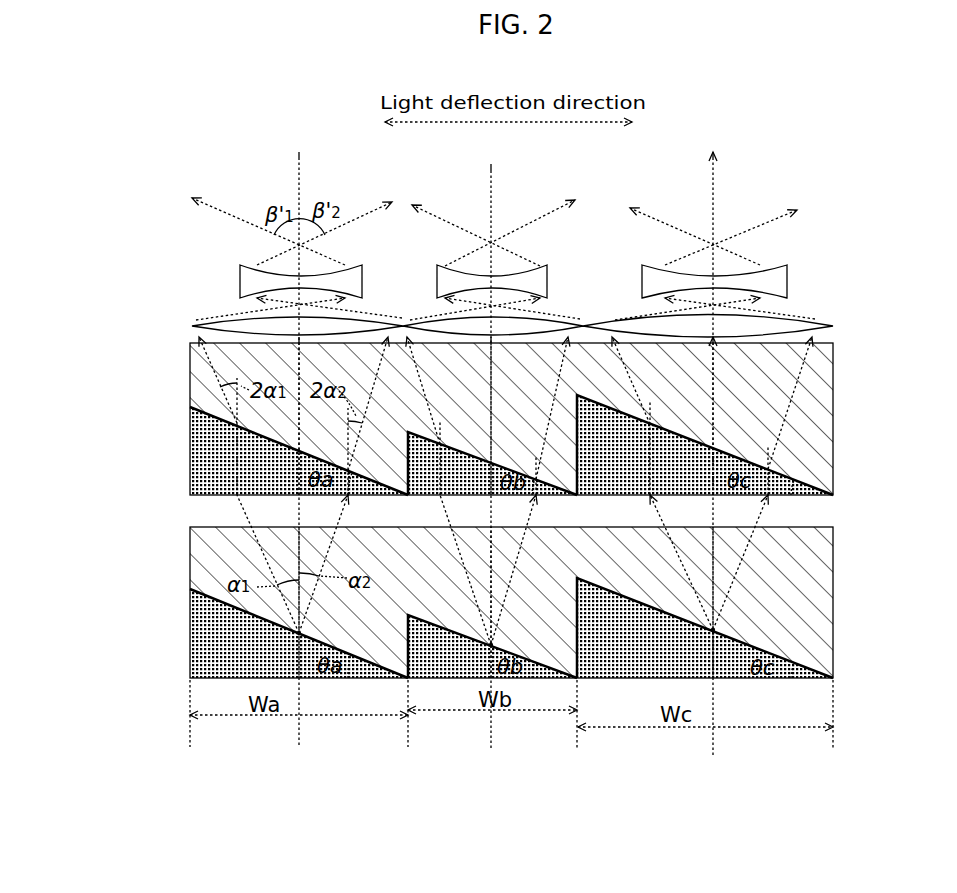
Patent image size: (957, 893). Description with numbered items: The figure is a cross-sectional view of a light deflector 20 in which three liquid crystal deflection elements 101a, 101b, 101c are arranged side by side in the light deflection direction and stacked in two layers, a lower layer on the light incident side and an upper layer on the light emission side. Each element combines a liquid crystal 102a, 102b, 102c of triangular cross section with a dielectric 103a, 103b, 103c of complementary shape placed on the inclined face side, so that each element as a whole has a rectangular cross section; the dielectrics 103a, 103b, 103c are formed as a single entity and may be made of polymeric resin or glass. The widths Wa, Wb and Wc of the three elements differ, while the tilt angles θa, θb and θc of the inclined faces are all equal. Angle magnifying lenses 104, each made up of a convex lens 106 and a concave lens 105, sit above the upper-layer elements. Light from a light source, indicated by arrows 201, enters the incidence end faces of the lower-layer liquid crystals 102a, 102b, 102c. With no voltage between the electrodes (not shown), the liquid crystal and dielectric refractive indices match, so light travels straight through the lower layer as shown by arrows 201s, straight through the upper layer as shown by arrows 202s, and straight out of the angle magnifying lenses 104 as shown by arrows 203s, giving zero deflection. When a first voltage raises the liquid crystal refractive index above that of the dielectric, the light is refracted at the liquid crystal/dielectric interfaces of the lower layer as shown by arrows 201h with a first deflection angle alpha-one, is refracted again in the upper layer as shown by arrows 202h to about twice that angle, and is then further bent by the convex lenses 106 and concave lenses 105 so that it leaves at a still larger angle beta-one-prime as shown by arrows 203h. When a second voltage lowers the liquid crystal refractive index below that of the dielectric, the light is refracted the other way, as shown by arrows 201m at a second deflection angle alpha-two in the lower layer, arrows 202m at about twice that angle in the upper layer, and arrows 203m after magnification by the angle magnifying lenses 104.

The light deflector 20 is at (90, 280).
The liquid crystal deflection element 101a is at (403, 778).
The liquid crystal deflection element 101b is at (578, 778).
The liquid crystal deflection element 101c is at (828, 778).
The liquid crystal 102a is at (218, 472).
The liquid crystal 102b is at (470, 456).
The liquid crystal 102c is at (752, 462).
The dielectric 103a is at (205, 382).
The dielectric 103b is at (418, 494).
The dielectric 103c is at (813, 393).
The angle magnifying lenses 104 is at (574, 291).
The concave lenses 105 is at (780, 272).
The convex lenses 106 is at (817, 327).
The arrows 201 is at (298, 730).
The arrows 201h is at (248, 540).
The arrows 201s is at (302, 540).
The arrows 201m is at (314, 598).
The arrows 202h is at (199, 368).
The arrows 202s is at (307, 360).
The arrows 202m is at (398, 388).
The arrows 203h is at (225, 212).
The arrows 203s is at (297, 168).
The arrows 203m is at (352, 220).